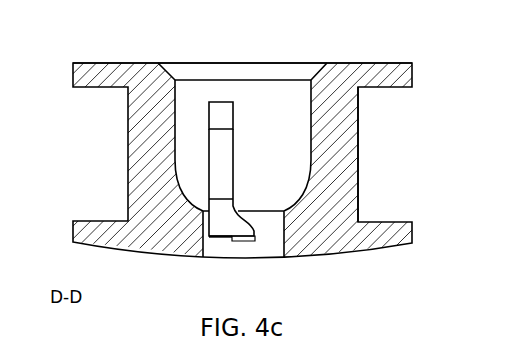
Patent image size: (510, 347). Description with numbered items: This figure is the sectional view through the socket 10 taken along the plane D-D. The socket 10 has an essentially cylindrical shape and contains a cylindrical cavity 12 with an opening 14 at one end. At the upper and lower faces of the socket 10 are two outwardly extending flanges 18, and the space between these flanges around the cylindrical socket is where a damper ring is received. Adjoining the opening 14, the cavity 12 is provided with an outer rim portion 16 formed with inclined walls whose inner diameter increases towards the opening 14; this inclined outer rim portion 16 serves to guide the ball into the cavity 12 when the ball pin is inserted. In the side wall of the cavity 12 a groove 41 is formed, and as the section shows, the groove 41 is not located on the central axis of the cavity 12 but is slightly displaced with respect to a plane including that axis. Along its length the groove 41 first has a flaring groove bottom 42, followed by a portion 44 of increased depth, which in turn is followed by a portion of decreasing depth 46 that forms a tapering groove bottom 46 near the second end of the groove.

The socket 10 is at (373, 250).
The cylindrical cavity 12 is at (243, 88).
The opening 14 is at (293, 70).
The outer rim portion 16 is at (173, 63).
The flange 18 is at (393, 92).
The groove 41 is at (182, 171).
The flaring groove bottom 42 is at (228, 110).
The portion of increased depth 44 is at (228, 145).
The tapering groove bottom 46 is at (244, 207).